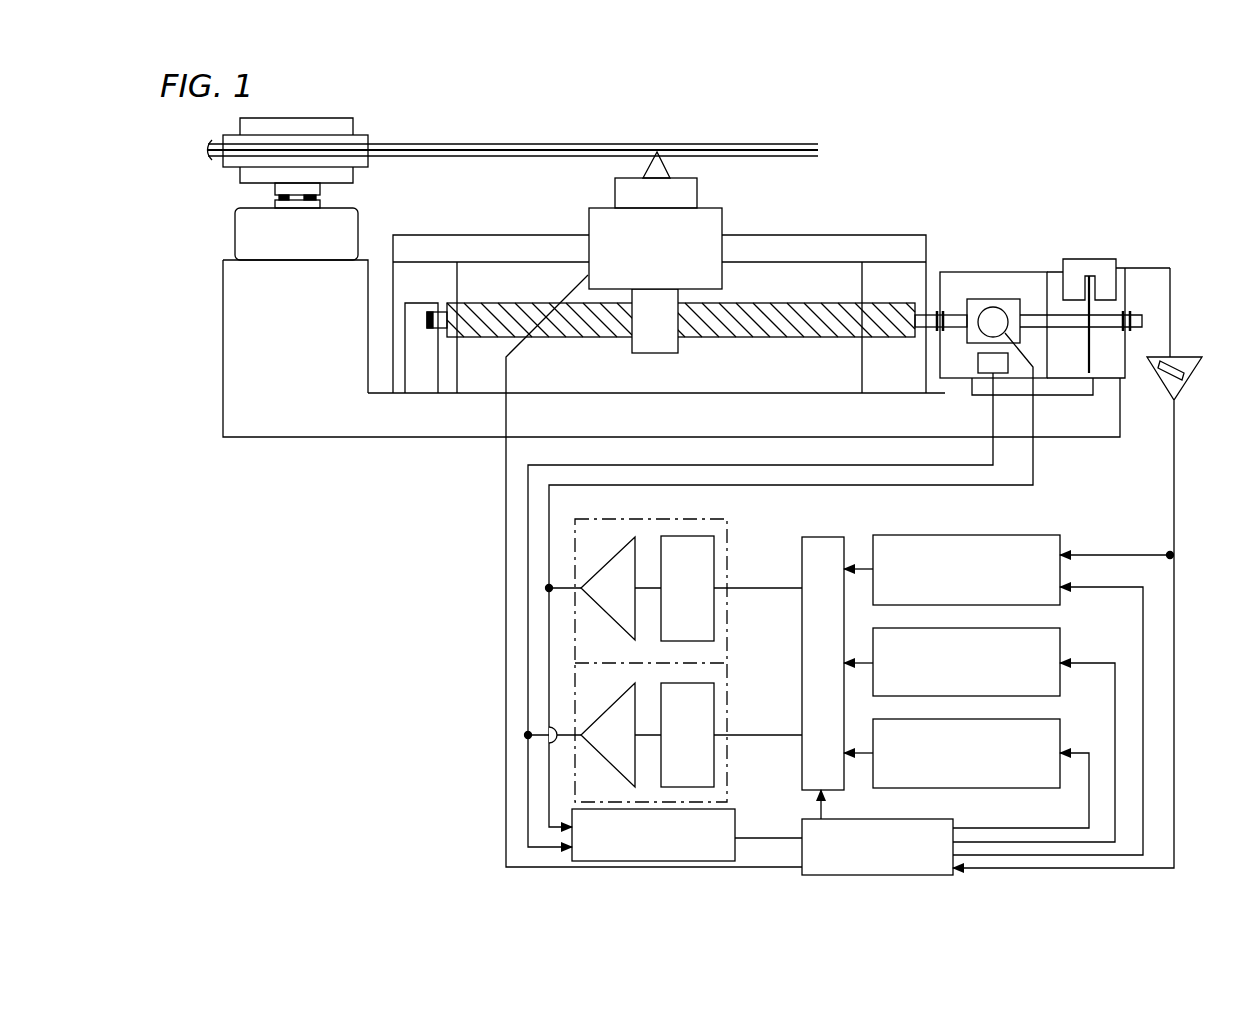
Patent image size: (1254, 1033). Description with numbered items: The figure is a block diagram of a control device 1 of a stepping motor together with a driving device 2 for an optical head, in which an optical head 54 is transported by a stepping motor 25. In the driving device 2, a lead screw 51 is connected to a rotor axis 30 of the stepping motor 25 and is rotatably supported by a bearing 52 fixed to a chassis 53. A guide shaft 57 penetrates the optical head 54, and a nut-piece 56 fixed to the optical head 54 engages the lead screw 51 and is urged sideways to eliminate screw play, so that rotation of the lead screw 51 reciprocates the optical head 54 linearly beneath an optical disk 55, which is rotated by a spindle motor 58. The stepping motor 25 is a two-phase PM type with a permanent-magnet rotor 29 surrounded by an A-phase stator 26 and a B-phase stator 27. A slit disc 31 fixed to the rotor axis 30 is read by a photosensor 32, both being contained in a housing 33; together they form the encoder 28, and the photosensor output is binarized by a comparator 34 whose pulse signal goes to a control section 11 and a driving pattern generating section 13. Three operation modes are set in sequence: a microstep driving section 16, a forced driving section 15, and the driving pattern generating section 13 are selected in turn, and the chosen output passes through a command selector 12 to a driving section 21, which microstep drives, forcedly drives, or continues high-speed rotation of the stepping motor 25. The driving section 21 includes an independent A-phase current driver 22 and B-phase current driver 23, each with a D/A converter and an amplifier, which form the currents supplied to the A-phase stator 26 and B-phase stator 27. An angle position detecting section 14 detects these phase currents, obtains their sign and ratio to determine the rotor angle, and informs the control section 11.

The stepping motor control device 1 is at (447, 628).
The driving device for an optical head 2 is at (262, 487).
The control section 11 is at (840, 876).
The command selector 12 is at (801, 750).
The driving pattern generating section 13 is at (1063, 540).
The angle position detecting section 14 is at (738, 830).
The forced driving section 15 is at (1063, 642).
The microstep driving section 16 is at (1063, 737).
The driving section 21 is at (664, 647).
The A-phase current driver 22 is at (728, 572).
The B-phase current driver 23 is at (728, 703).
The stepping motor 25 is at (997, 272).
The A-phase stator 26 is at (985, 318).
The B-phase stator 27 is at (975, 368).
The encoder 28 is at (1113, 272).
The rotor 29 is at (1012, 303).
The rotor axis 30 is at (1145, 322).
The slit disc 31 is at (1092, 307).
The photosensor 32 is at (1093, 259).
The housing 33 is at (1127, 380).
The comparator 34 is at (1177, 379).
The lead screw 51 is at (730, 338).
The bearing 52 is at (415, 303).
The chassis 53 is at (367, 440).
The optical head 54 is at (718, 208).
The optical disk 55 is at (685, 146).
The nut-piece 56 is at (628, 337).
The guide shaft 57 is at (818, 233).
The spindle motor 58 is at (237, 228).